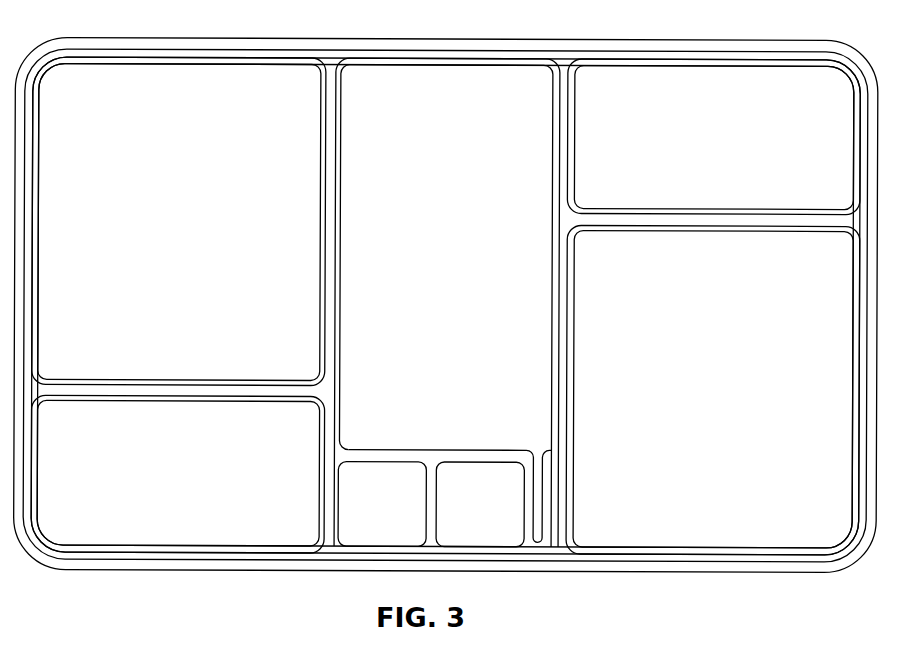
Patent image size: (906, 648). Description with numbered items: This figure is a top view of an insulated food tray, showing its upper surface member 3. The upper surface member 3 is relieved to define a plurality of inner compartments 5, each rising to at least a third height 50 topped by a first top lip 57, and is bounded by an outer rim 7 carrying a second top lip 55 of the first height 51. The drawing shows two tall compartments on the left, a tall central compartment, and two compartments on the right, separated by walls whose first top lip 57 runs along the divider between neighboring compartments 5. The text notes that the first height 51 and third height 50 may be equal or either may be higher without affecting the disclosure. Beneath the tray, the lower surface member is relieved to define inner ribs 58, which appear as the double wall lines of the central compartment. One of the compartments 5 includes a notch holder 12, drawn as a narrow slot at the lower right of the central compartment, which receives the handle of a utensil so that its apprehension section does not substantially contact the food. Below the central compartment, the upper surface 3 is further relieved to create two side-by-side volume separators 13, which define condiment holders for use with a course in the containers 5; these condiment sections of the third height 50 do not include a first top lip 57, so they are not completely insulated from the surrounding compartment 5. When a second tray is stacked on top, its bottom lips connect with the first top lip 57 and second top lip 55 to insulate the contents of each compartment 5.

The upper surface member 3 is at (22, 268).
The inner compartment 5 is at (697, 83).
The outer rim 7 is at (862, 313).
The notch holder 12 is at (543, 470).
The volume separator 13 is at (492, 477).
The third height 50 is at (373, 458).
The first height 51 is at (22, 143).
The second top lip 55 is at (32, 208).
The first top lip 57 is at (332, 182).
The inner rib 58 is at (336, 233).